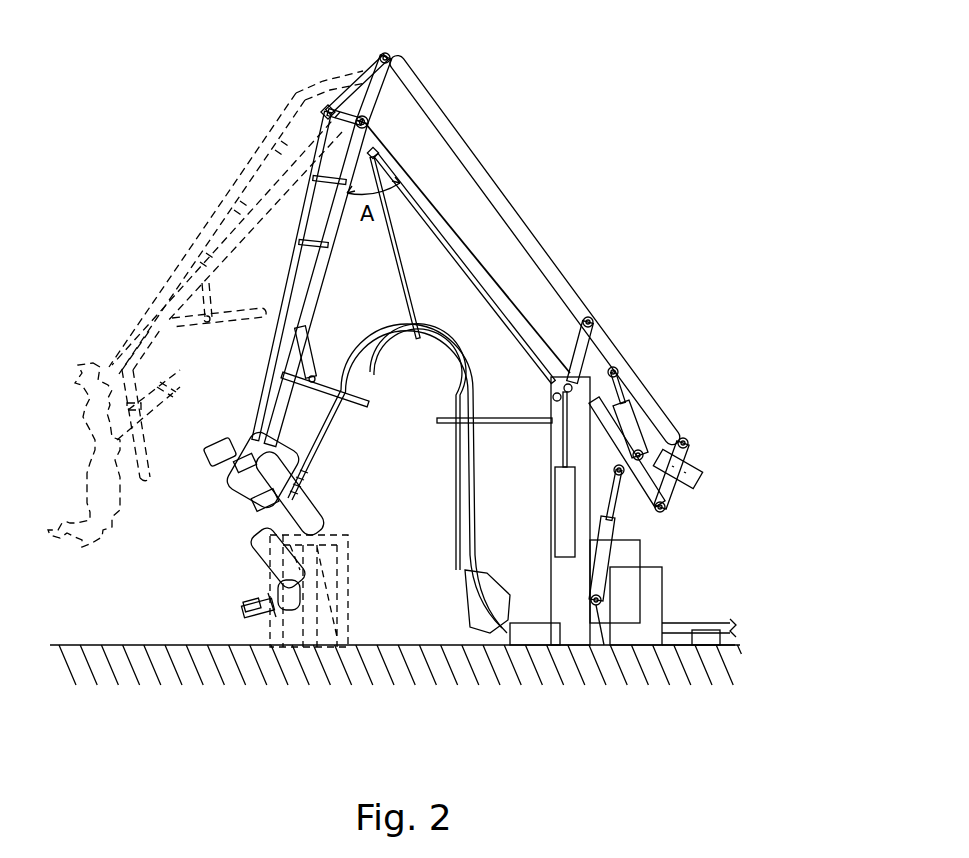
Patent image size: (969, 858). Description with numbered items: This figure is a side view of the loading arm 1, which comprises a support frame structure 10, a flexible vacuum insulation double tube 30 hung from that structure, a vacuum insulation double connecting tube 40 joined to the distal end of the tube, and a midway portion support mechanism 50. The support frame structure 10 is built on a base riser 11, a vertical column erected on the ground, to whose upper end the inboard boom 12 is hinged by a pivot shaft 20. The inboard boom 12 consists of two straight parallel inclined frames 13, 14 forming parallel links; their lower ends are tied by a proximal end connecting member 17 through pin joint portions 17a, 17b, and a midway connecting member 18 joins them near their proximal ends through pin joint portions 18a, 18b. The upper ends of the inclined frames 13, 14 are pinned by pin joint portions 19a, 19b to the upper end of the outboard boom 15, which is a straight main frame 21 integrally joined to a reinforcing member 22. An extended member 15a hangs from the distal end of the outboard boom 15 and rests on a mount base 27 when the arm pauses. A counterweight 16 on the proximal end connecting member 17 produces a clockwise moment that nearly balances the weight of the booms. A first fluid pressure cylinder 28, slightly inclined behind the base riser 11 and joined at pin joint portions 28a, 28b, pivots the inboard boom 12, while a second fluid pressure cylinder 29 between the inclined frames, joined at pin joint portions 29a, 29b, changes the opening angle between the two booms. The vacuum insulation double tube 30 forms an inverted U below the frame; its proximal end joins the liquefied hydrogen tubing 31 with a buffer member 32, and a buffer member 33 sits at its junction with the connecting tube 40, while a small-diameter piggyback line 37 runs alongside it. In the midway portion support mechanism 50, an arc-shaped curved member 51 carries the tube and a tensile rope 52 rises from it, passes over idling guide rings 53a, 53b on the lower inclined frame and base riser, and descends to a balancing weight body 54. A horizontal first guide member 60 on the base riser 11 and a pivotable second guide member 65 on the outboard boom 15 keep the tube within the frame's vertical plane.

The loading arm 1 is at (476, 82).
The support frame structure 10 is at (586, 272).
The base riser 11 is at (551, 503).
The inboard boom 12 is at (524, 250).
The inclined frame 13 is at (516, 210).
The inclined frame 14 is at (483, 265).
The outboard boom 15 is at (325, 278).
The extended member 15a is at (303, 507).
The counterweight 16 is at (700, 481).
The proximal end connecting member 17 is at (672, 490).
The pin joint portion 17a is at (690, 443).
The pin joint portion 17b is at (665, 510).
The midway connecting member 18 is at (578, 350).
The pin joint portion 18a is at (592, 319).
The pin joint portion 18b is at (565, 388).
The pin joint portion 19a is at (391, 55).
The pin joint portion 19b is at (369, 121).
The pivot shaft 20 is at (506, 393).
The main frame 21 is at (312, 298).
The reinforcing member 22 is at (290, 312).
The mount base 27 is at (350, 592).
The first fluid pressure cylinder 28 is at (618, 568).
The pin joint portion 28a is at (597, 606).
The pin joint portion 28b is at (623, 476).
The second fluid pressure cylinder 29 is at (636, 420).
The pin joint portion 29a is at (643, 453).
The pin joint portion 29b is at (617, 369).
The vacuum insulation double tube 30 is at (458, 497).
The liquefied hydrogen tubing 31 is at (688, 622).
The buffer member 32 is at (470, 578).
The buffer member 33 is at (292, 455).
The piggyback line 37 is at (455, 292).
The vacuum insulation double connecting tube 40 is at (289, 523).
The midway portion support mechanism 50 is at (421, 350).
The curved member 51 is at (374, 362).
The tensile rope 52 is at (403, 268).
The idling guide ring 53a is at (380, 157).
The idling guide ring 53b is at (552, 414).
The weight body 54 is at (555, 548).
The first guide member 60 is at (442, 427).
The second guide member 65 is at (357, 407).